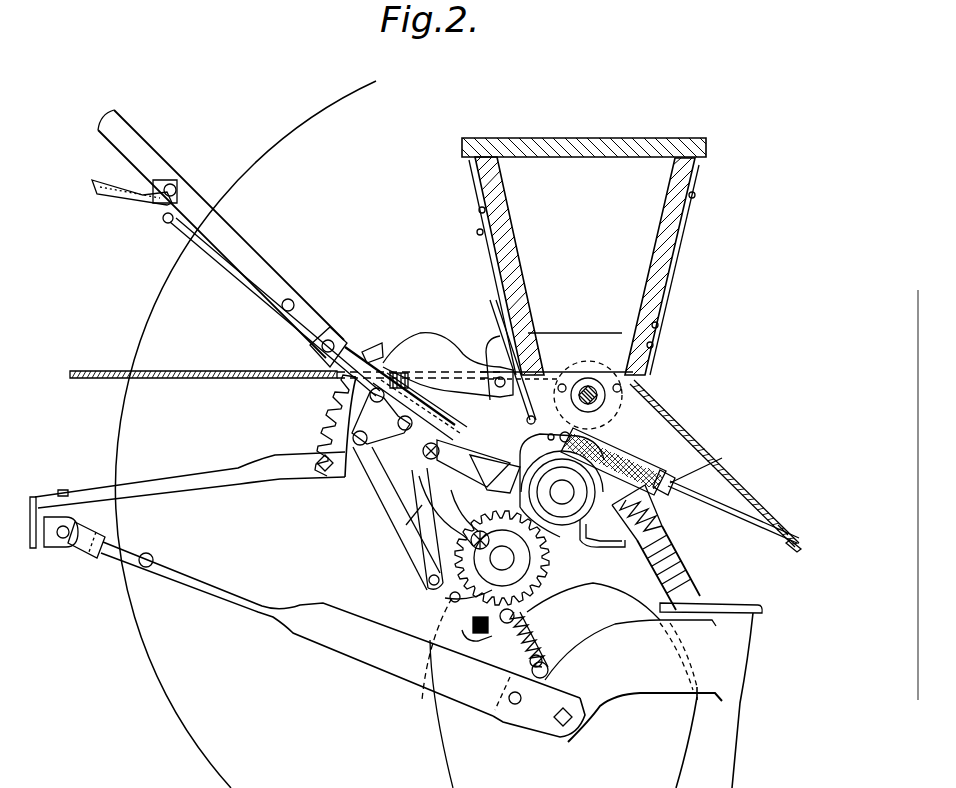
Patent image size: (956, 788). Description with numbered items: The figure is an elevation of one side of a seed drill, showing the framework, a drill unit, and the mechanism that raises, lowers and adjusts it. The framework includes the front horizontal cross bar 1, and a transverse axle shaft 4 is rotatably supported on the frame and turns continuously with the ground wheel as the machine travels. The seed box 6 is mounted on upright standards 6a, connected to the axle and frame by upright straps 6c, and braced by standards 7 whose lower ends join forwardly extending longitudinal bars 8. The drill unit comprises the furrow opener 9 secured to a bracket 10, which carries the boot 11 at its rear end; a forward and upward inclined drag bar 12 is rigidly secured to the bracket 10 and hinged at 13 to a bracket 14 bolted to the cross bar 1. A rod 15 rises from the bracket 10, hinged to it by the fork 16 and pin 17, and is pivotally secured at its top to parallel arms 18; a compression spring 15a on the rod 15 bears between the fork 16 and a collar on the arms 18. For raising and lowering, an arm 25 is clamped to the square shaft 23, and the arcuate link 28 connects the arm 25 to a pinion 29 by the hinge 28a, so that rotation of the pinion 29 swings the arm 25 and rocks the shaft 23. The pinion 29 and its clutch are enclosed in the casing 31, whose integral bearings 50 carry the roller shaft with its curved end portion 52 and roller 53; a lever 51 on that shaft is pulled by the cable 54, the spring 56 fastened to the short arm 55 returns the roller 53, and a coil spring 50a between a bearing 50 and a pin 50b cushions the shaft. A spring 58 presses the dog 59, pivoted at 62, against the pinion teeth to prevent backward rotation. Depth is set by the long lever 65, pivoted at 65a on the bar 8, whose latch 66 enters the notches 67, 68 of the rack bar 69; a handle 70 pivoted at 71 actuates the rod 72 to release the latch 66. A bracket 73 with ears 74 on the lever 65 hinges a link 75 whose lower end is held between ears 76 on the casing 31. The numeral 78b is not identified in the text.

The front horizontal cross bar 1 is at (34, 500).
The axle shaft 4 is at (640, 463).
The seed box 6 is at (584, 283).
The upright standard 6a is at (660, 308).
The upright strap 6c is at (498, 330).
The standard 7 is at (496, 343).
The longitudinal bar 8 is at (272, 458).
The furrow opener 9 is at (406, 434).
The bracket 10 is at (624, 662).
The boot 11 is at (745, 612).
The drag bar 12 is at (330, 605).
The hinge 13 is at (70, 528).
The bracket 14 is at (53, 547).
The rod 15 is at (540, 630).
The compression spring 15a is at (545, 645).
The fork 16 is at (541, 660).
The pin 17 is at (548, 672).
The parallel arms 18 is at (440, 398).
The square shaft 23 is at (522, 368).
The arm 25 is at (468, 445).
The arcuate link 28 is at (445, 508).
The hinge 28a is at (452, 600).
The pinion 29 is at (502, 558).
The casing 31 is at (471, 541).
The bearing 50 is at (666, 505).
The coil spring 50a is at (690, 547).
The pin 50b is at (713, 552).
The lever 51 is at (778, 524).
The curved end portion 52 is at (598, 510).
The roller 53 is at (592, 547).
The cable 54 is at (218, 371).
The short arm 55 is at (568, 437).
The spring 56 is at (562, 492).
The spring 58 is at (472, 625).
The dog 59 is at (490, 638).
The pivot 62 is at (516, 616).
The long lever 65 is at (258, 275).
The pivot point 65a is at (406, 528).
The latch 66 is at (345, 330).
The notch 67 is at (365, 350).
The notch 68 is at (385, 340).
The rack bar 69 is at (427, 352).
The handle 70 is at (135, 208).
The pivot 71 is at (176, 186).
The rod 72 is at (197, 240).
The bracket 73 is at (380, 500).
The ears 74 is at (356, 455).
The link 75 is at (408, 545).
The ears 76 is at (428, 585).
The rod 78b is at (700, 470).